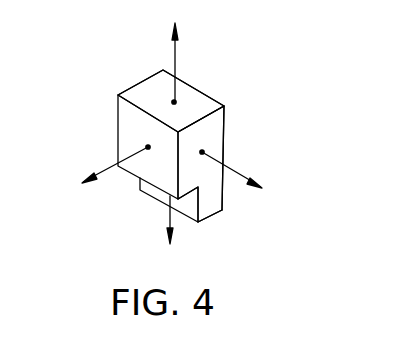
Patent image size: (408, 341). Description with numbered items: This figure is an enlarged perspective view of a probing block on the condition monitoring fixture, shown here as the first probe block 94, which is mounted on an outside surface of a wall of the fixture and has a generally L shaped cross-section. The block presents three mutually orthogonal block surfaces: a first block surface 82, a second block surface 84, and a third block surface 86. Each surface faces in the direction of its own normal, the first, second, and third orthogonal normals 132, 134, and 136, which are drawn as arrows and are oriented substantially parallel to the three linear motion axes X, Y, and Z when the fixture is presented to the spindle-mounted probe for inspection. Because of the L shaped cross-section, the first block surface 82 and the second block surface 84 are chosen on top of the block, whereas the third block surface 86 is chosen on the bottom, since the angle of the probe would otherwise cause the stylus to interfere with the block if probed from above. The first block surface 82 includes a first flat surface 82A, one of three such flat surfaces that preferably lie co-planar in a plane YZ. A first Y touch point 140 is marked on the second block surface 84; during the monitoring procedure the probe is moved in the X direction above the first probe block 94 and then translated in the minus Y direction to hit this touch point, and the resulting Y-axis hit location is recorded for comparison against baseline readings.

The first block surface 82 is at (118, 100).
The first flat surface 82A is at (140, 192).
The second block surface 84 is at (155, 80).
The third block surface 86 is at (227, 114).
The first probe block 94 is at (283, 238).
The first orthogonal normal 132 is at (97, 170).
The second orthogonal normal 134 is at (177, 55).
The third orthogonal normal 136 is at (233, 170).
The first Y touch point 140 is at (176, 101).